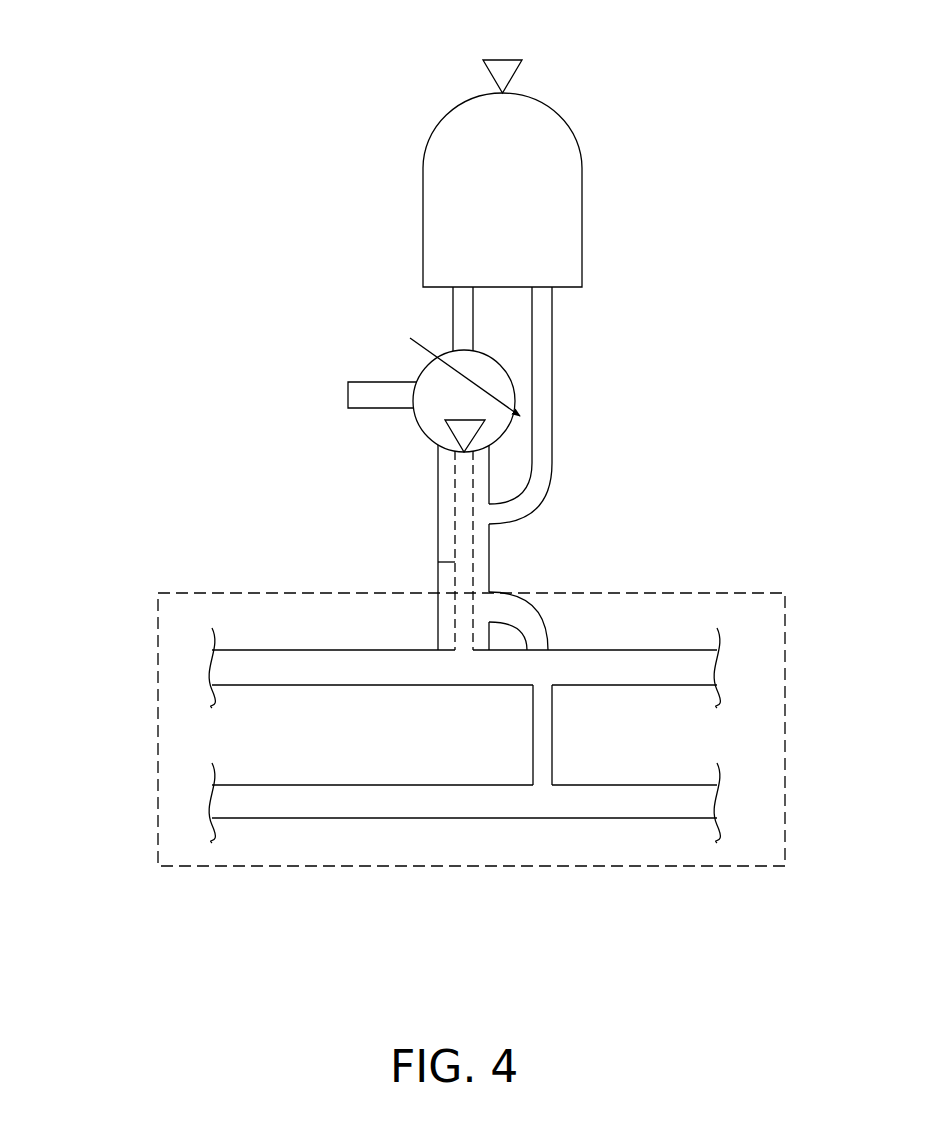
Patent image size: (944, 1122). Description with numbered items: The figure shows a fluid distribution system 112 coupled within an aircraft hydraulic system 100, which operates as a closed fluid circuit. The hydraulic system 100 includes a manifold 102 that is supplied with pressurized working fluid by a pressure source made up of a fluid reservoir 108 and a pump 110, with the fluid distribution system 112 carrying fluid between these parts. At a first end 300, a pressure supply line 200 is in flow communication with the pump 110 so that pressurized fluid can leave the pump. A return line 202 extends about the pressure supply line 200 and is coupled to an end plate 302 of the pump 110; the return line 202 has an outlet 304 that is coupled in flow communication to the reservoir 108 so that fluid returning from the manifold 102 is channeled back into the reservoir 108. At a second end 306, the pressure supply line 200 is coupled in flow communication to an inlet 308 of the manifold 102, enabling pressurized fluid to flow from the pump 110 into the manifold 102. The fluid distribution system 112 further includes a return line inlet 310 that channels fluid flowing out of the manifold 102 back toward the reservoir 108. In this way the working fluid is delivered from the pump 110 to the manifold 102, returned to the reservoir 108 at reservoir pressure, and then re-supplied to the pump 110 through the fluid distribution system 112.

The hydraulic system 100 is at (346, 52).
The manifold 102 is at (158, 782).
The fluid reservoir 108 is at (582, 195).
The pump 110 is at (422, 362).
The fluid distribution system 112 is at (416, 538).
The pressure supply line 200 is at (438, 562).
The return line 202 is at (489, 565).
The first end 300 is at (421, 466).
The end plate 302 is at (440, 449).
The outlet 304 is at (507, 531).
The second end 306 is at (305, 576).
The inlet 308 is at (438, 646).
The return line inlet 310 is at (505, 597).